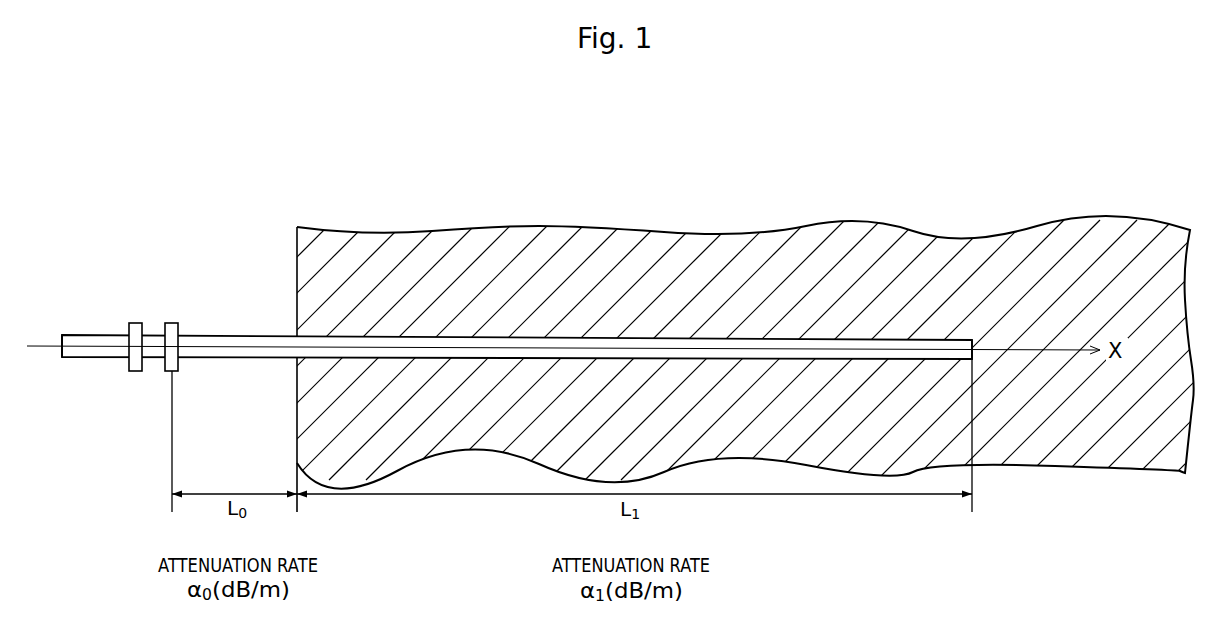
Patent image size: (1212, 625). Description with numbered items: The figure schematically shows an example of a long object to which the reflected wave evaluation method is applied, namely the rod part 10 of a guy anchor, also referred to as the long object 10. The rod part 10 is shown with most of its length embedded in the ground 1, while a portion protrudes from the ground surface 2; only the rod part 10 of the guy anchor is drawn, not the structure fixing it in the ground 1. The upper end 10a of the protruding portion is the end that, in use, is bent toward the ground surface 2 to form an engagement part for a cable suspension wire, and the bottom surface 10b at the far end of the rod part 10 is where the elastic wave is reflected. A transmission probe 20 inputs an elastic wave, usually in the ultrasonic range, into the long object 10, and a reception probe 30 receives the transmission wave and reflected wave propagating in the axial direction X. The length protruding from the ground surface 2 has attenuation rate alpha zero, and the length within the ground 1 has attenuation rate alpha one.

The ground 1 is at (604, 230).
The ground surface 2 is at (297, 227).
The rod part 10 is at (236, 336).
The upper end 10a is at (62, 336).
The bottom surface 10b is at (972, 340).
The transmission probe 20 is at (135, 323).
The reception probe 30 is at (172, 323).